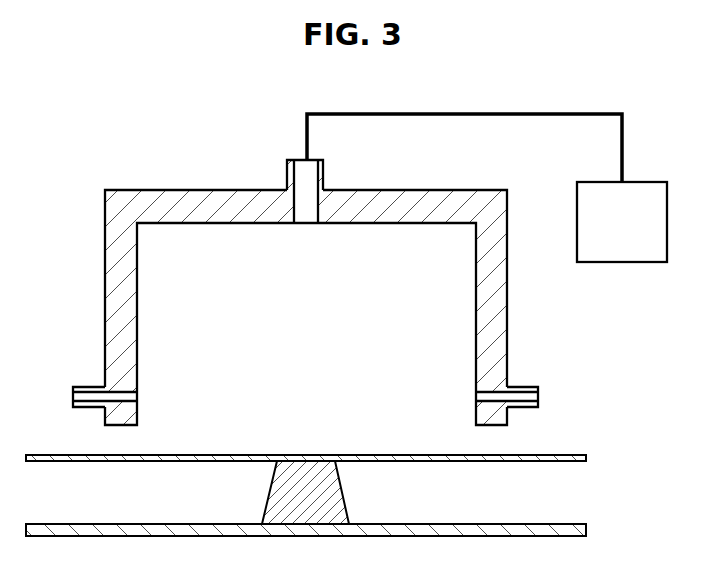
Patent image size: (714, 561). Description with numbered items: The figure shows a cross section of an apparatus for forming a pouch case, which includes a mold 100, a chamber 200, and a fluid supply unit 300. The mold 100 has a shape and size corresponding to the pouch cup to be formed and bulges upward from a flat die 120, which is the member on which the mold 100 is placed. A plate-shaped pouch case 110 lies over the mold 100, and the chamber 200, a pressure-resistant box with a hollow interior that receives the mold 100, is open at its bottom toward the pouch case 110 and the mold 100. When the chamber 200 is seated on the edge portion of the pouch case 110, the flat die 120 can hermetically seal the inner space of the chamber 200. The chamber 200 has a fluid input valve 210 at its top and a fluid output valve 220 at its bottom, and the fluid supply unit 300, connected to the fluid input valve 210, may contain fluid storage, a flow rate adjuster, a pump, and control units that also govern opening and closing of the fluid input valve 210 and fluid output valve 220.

The mold 100 is at (337, 489).
The pouch case 110 is at (571, 455).
The flat die 120 is at (571, 524).
The chamber 200 is at (446, 190).
The fluid input valve 210 is at (324, 165).
The fluid output valve 220 is at (532, 387).
The fluid supply unit 300 is at (603, 232).